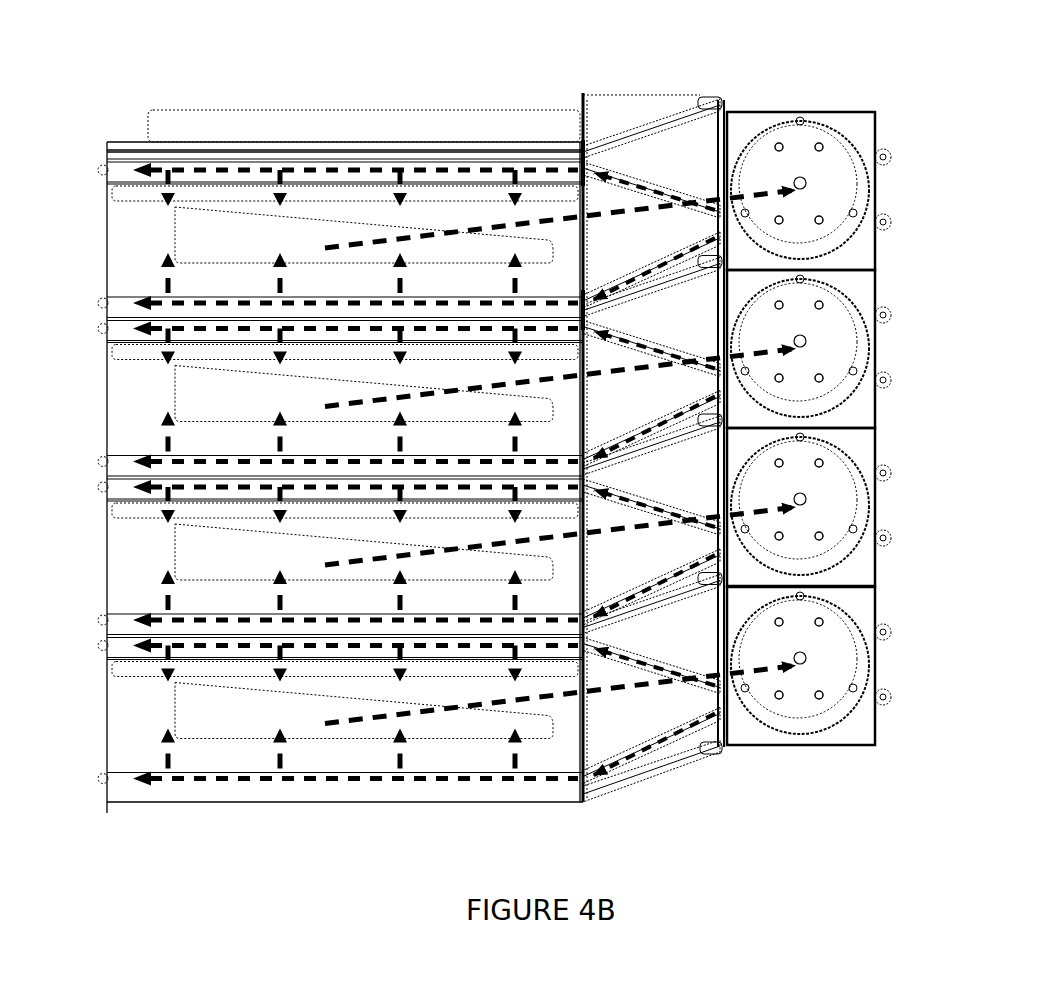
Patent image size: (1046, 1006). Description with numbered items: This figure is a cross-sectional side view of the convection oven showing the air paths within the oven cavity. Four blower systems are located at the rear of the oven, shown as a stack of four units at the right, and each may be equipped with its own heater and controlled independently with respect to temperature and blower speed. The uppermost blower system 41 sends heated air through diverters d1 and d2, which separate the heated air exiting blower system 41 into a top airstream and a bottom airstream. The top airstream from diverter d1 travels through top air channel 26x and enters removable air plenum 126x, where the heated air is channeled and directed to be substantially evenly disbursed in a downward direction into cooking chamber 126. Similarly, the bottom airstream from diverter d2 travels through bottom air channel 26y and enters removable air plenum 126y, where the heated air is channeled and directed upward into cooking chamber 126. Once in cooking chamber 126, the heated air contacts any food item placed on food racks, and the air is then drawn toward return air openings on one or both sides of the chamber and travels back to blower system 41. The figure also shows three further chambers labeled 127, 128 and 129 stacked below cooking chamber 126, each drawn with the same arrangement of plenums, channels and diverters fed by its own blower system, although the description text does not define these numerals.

The removable air plenum 126x is at (257, 168).
The cooking chamber 126 is at (148, 247).
The removable air plenum 126y is at (197, 305).
The second growing tray module 127 is at (148, 403).
The third growing tray module 128 is at (130, 562).
The fourth growing tray module 129 is at (128, 727).
The top air channel 26x is at (578, 168).
The bottom air channel 26y is at (583, 305).
The diverter d1 is at (645, 188).
The diverter d2 is at (663, 252).
The blower system 41 is at (826, 180).